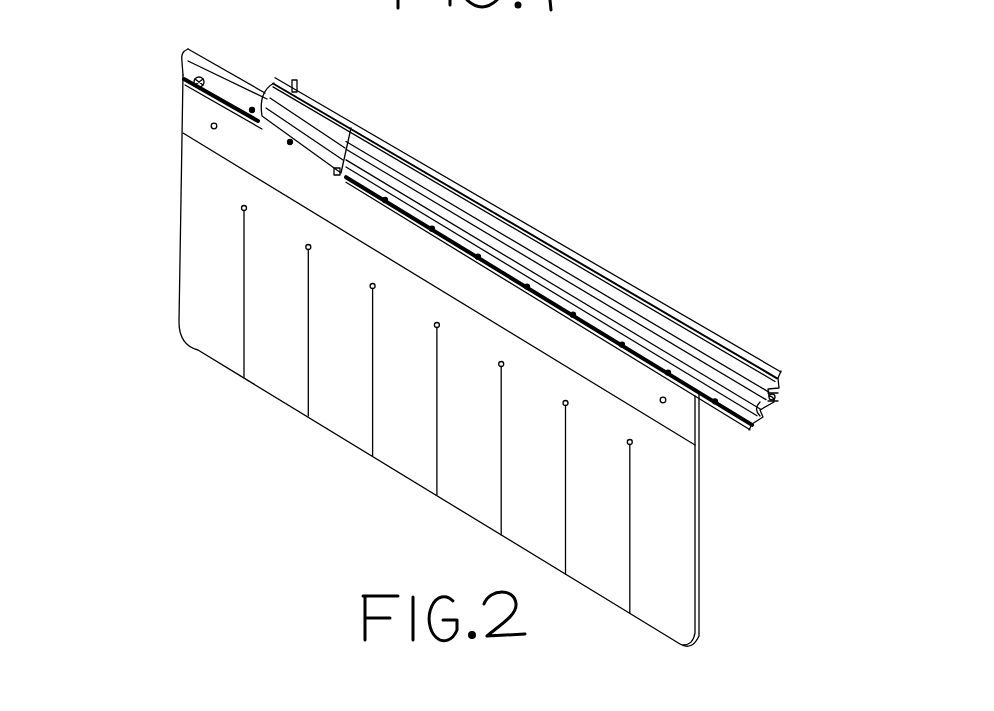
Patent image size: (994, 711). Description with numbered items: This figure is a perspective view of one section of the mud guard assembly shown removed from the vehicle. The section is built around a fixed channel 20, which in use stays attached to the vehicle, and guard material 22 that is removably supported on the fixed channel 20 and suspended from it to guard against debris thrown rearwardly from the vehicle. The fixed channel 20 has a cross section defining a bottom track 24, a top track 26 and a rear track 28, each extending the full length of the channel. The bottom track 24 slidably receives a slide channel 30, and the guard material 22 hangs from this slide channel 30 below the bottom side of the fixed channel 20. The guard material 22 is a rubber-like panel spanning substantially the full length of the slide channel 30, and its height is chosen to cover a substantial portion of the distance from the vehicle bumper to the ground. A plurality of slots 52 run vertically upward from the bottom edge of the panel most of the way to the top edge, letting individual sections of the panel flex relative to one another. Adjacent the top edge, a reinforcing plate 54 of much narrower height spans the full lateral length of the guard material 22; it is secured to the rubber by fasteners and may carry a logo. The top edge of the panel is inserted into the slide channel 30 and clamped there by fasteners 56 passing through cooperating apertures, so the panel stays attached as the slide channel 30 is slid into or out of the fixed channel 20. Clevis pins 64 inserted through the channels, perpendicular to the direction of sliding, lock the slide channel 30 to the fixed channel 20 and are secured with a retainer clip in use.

The fixed channel 20 is at (545, 272).
The guard material 22 is at (680, 545).
The bottom track 24 is at (752, 423).
The top track 26 is at (733, 353).
The rear track 28 is at (780, 396).
The slide channel 30 is at (201, 55).
The slots 52 is at (243, 333).
The reinforcing plate 54 is at (240, 148).
The fasteners 56 is at (194, 78).
The clevis pins 64 is at (342, 174).